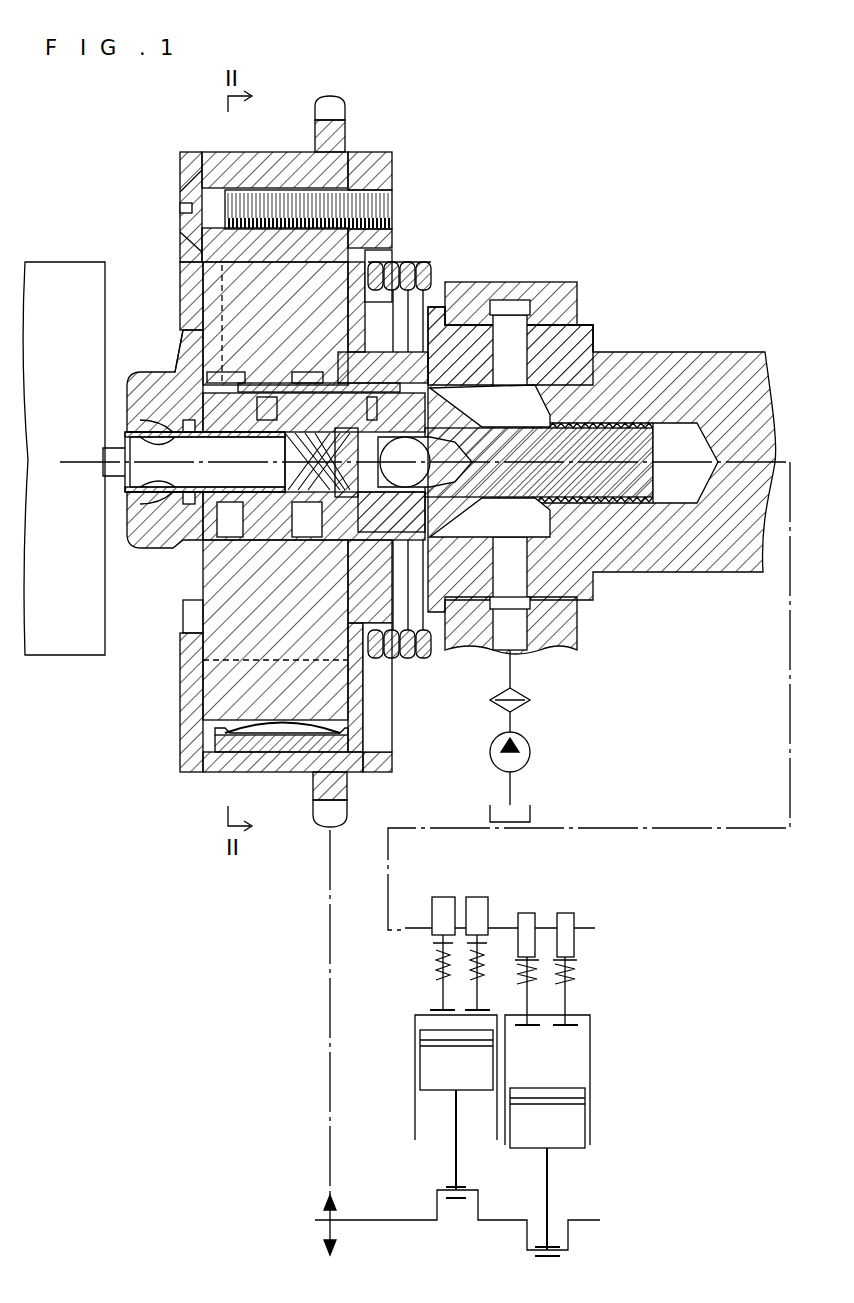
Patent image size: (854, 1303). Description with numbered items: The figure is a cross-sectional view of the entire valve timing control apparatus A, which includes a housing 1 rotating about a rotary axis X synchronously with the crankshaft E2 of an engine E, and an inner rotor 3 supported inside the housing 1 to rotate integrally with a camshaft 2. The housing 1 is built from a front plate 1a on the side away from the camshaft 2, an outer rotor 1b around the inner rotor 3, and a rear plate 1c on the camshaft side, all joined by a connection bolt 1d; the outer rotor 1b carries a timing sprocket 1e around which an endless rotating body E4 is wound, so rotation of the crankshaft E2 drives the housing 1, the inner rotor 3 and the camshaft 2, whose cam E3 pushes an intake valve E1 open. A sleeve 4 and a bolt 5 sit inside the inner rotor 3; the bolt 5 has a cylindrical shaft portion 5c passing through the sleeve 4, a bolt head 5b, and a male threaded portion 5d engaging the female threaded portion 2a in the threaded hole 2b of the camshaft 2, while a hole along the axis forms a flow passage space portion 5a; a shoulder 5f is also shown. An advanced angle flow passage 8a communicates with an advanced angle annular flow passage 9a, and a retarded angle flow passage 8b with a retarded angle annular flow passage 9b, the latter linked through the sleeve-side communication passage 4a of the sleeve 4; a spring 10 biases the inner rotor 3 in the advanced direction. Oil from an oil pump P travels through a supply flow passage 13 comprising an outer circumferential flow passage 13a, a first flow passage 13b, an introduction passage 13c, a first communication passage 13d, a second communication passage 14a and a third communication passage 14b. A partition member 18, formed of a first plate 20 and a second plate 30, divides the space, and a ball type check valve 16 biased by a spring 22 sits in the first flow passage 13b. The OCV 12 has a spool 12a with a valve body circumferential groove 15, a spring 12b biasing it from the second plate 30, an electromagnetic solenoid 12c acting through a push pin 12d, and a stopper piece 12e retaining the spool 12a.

The housing 1 is at (170, 163).
The front plate 1a is at (183, 758).
The outer rotor 1b is at (242, 150).
The rear plate 1c is at (370, 152).
The connection bolt 1d is at (182, 193).
The timing sprocket 1e is at (323, 815).
The camshaft 2 is at (718, 573).
The female threaded portion 2a is at (618, 428).
The threaded hole 2b is at (445, 410).
The inner rotor 3 is at (205, 690).
The sleeve 4 is at (422, 640).
The sleeve-side communication passage 4a is at (281, 715).
The bolt 5 is at (113, 375).
The flow passage space portion 5a is at (175, 432).
The bolt head 5b is at (130, 530).
The cylindrical shaft portion 5c is at (412, 540).
The male threaded portion 5d is at (622, 503).
The valve body shoulder 5f is at (180, 340).
The advanced angle flow passage 8a is at (180, 270).
The retarded angle flow passage 8b is at (275, 630).
The advanced angle annular flow passage 9a is at (225, 390).
The retarded angle annular flow passage 9b is at (292, 382).
The spring 10 is at (395, 652).
The OCV 12 is at (113, 442).
The spool 12a is at (165, 528).
The spring 12b is at (290, 460).
The electromagnetic solenoid 12c is at (62, 262).
The push pin 12d is at (115, 470).
The stopper piece 12e is at (180, 490).
The supply flow passage 13 is at (521, 628).
The outer circumferential flow passage 13a is at (522, 532).
The first flow passage 13b is at (490, 406).
The introduction passage 13c is at (468, 285).
The first communication passage 13d is at (262, 396).
The second communication passage 14a is at (188, 620).
The third communication passage 14b is at (305, 560).
The valve body circumferential groove 15 is at (240, 530).
The check valve 16 is at (452, 465).
The partition member 18 is at (398, 301).
The first plate 20 is at (395, 352).
The spring 22 is at (400, 475).
The second plate 30 is at (340, 380).
The valve timing control apparatus A is at (150, 123).
The engine E is at (707, 146).
The intake valve E1 is at (565, 1045).
The crankshaft E2 is at (372, 1220).
The cam E3 is at (565, 913).
The endless rotating body E4 is at (325, 1012).
The oil pump P is at (531, 748).
The rotary axis X is at (417, 463).